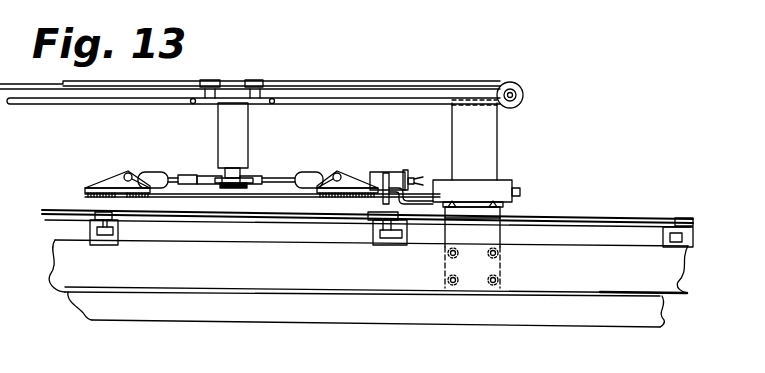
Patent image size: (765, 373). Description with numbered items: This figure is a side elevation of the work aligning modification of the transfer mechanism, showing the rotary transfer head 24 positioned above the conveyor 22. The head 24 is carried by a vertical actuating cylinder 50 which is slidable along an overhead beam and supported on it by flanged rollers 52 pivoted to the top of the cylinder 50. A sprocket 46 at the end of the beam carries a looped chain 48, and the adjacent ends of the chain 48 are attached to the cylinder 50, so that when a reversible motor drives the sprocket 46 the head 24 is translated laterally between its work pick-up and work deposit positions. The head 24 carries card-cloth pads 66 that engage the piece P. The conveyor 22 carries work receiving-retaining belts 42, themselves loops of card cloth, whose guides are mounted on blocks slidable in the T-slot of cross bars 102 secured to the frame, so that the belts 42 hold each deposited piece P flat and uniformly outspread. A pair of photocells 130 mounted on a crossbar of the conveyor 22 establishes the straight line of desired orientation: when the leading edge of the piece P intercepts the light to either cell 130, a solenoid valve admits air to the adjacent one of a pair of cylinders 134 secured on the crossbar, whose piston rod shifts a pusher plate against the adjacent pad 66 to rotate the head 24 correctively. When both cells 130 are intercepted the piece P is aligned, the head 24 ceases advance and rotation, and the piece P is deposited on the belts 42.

The conveyor 22 is at (609, 199).
The rotary transfer head 24 is at (183, 145).
The work receiving-retaining belts 42 is at (630, 291).
The sprocket 46 is at (523, 97).
The looped chain 48 is at (345, 82).
The vertical actuating cylinder 50 is at (249, 135).
The flanged rollers 52 is at (210, 80).
The pads 66 is at (113, 176).
The cross bars 102 is at (118, 232).
The photocells 130 is at (397, 172).
The cylinders 134 is at (506, 181).
The piece P is at (275, 200).